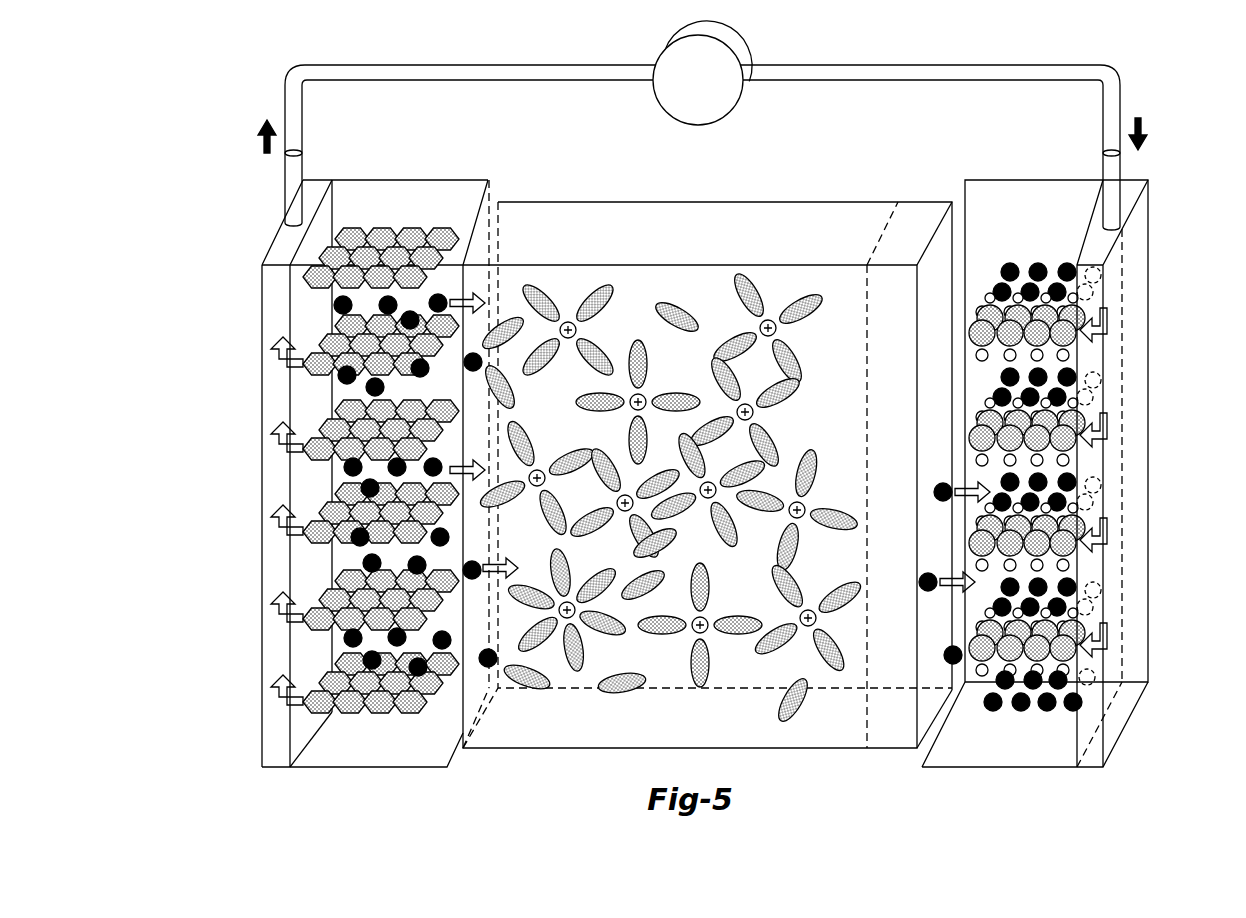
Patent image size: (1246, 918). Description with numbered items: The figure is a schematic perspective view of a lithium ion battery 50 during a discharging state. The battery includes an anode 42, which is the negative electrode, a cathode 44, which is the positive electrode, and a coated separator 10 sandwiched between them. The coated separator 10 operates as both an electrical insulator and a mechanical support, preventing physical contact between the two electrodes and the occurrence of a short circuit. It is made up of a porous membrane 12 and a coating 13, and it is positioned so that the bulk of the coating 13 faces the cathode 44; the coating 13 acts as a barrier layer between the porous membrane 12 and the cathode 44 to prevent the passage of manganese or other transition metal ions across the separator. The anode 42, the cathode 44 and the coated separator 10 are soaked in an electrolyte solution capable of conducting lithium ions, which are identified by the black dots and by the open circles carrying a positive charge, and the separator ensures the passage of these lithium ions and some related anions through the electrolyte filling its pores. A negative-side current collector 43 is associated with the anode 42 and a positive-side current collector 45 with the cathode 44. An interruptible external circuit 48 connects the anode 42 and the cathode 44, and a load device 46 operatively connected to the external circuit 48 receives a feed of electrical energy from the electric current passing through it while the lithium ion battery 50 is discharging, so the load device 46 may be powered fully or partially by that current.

The coated separator 10 is at (718, 200).
The porous membrane 12 is at (517, 737).
The coating 13 is at (920, 218).
The anode 42 is at (352, 770).
The negative-side current collector 43 is at (278, 742).
The cathode 44 is at (972, 770).
The positive-side current collector 45 is at (1092, 758).
The load device 46 is at (745, 38).
The external circuit 48 is at (541, 64).
The lithium ion battery 50 is at (1152, 76).